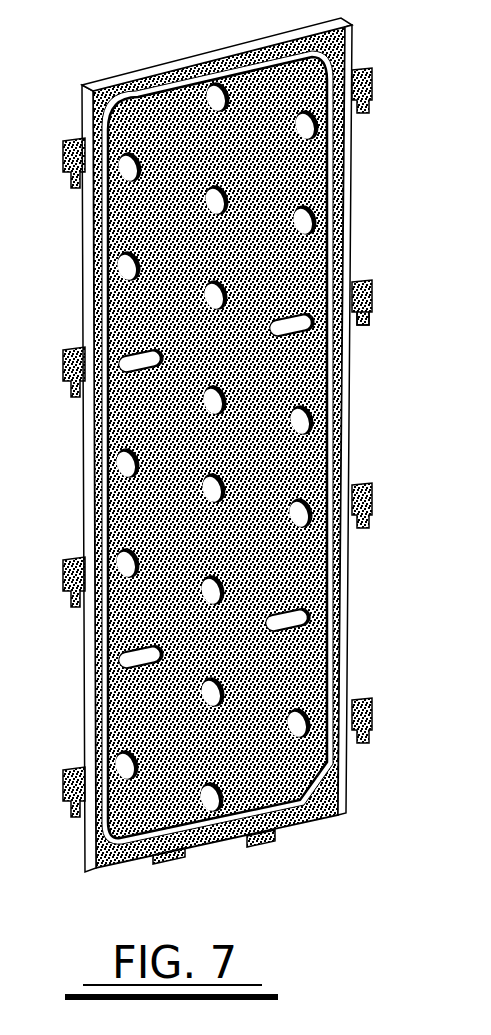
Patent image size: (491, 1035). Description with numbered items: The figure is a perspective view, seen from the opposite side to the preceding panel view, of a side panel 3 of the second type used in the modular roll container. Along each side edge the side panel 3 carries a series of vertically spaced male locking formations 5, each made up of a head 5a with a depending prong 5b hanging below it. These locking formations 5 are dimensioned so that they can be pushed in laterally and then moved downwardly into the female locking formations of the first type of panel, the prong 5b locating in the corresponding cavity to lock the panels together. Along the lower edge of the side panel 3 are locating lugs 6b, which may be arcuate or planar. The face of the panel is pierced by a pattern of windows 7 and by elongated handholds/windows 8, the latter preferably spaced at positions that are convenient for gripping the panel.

The side panel of a second type 3 is at (70, 115).
The male locking formation 5 is at (378, 107).
The head 5a is at (322, 302).
The prong 5b is at (369, 317).
The window 7 is at (122, 262).
The handhold/window 8 is at (305, 327).
The locating lug 6b is at (182, 865).